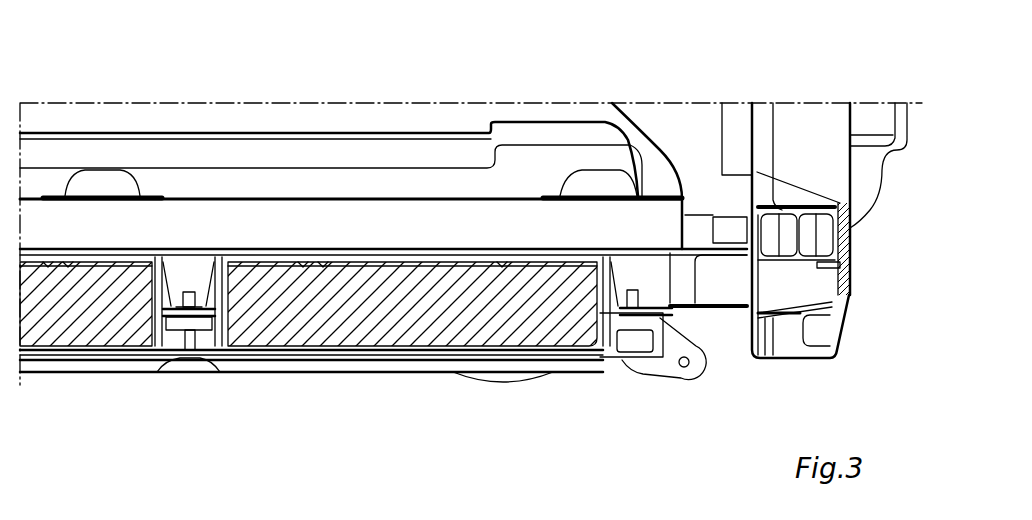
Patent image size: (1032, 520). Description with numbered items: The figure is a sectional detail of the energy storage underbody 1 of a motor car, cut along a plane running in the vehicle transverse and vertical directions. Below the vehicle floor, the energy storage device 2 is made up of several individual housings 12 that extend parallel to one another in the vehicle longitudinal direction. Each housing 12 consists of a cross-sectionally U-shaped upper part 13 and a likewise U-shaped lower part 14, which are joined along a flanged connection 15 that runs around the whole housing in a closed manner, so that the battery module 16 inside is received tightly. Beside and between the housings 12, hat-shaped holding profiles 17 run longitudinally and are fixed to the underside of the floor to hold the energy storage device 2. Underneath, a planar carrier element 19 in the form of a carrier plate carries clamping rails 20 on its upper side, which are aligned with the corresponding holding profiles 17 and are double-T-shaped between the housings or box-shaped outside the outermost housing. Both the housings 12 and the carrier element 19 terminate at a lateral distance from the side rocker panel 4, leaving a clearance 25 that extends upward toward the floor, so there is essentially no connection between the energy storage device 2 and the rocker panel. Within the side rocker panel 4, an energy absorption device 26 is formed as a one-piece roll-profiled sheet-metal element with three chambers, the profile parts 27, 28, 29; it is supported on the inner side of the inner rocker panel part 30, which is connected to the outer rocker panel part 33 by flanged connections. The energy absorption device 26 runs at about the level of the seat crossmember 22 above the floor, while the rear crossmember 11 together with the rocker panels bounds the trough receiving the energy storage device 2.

The underbody 1 is at (813, 78).
The energy storage device 2 is at (345, 377).
The side rocker panel 4 is at (850, 273).
The rear crossmember 11 is at (732, 290).
The housing 12 is at (470, 312).
The upper part 13 is at (125, 262).
The lower part 14 is at (127, 258).
The flanged connection 15 is at (205, 333).
The battery module 16 is at (97, 325).
The holding profile 17 is at (205, 257).
The carrier element 19 is at (402, 373).
The clamping rail 20 is at (178, 350).
The seat crossmember 22 is at (560, 217).
The clearance 25 is at (715, 335).
The energy absorption device 26 is at (815, 210).
The profile part 27 is at (757, 212).
The profile part 28 is at (797, 213).
The profile part 29 is at (832, 237).
The inner rocker panel part 30 is at (760, 290).
The outer rocker panel part 33 is at (837, 328).